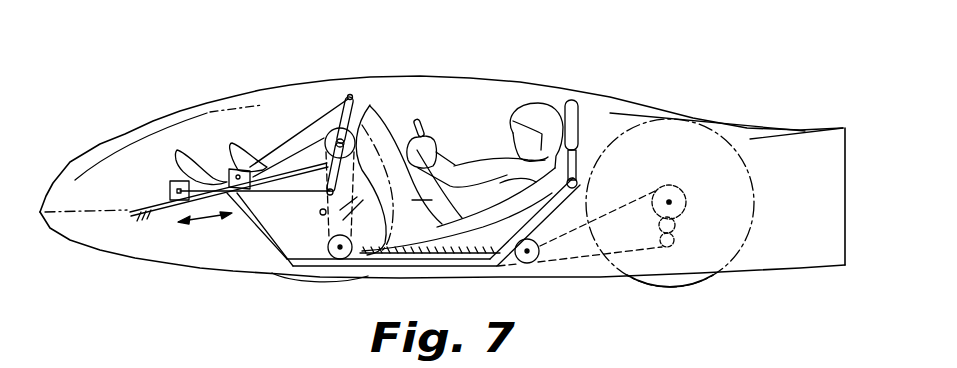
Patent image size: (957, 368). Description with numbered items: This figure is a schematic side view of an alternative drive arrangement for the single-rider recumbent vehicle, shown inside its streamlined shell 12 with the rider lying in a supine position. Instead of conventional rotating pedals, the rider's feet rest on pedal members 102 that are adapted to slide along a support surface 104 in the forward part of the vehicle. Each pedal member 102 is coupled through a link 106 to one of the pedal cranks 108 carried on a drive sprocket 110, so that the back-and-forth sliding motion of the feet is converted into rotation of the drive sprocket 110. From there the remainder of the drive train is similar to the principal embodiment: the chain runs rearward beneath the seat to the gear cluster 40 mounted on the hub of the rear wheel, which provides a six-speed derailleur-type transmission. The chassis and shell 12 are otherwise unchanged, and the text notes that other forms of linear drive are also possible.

The streamlined shell 12 is at (610, 96).
The gear cluster 40 is at (668, 189).
The pedal members 102 is at (230, 172).
The support surface 104 is at (172, 184).
The links 106 is at (328, 122).
The pedal cranks 108 is at (363, 108).
The drive sprocket 110 is at (384, 112).